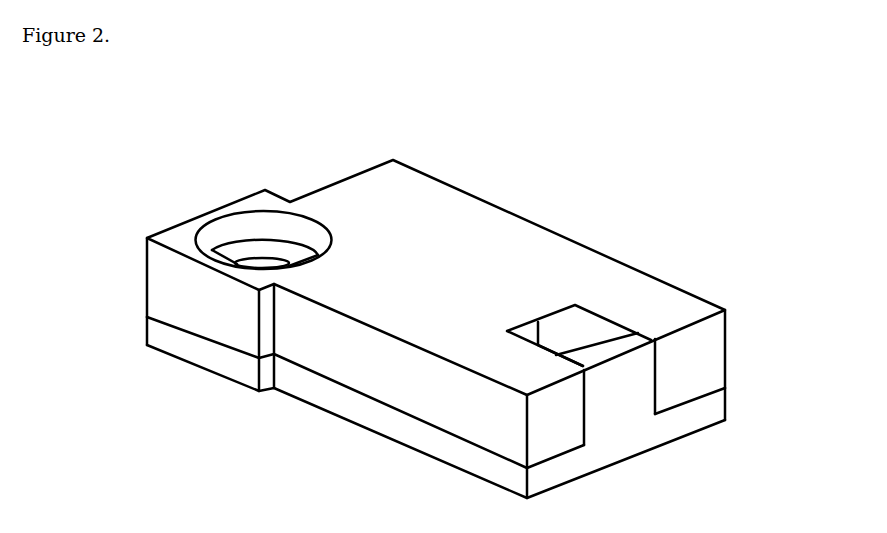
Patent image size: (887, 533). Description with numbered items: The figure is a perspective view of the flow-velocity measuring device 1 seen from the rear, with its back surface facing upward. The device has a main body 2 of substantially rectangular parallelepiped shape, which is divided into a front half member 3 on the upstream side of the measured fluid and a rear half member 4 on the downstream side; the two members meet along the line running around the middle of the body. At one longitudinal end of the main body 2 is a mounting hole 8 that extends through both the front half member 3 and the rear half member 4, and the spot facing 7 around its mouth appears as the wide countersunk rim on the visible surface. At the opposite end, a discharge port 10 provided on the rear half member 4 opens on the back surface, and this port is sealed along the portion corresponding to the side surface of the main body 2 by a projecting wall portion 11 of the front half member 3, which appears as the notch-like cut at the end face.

The flow-velocity measuring device 1 is at (221, 158).
The main body 2 is at (138, 295).
The front half member 3 is at (342, 405).
The rear half member 4 is at (460, 217).
The spot facing 7 is at (218, 212).
The mounting hole 8 is at (273, 261).
The discharge port 10 is at (590, 304).
The projecting wall portion 11 is at (632, 387).